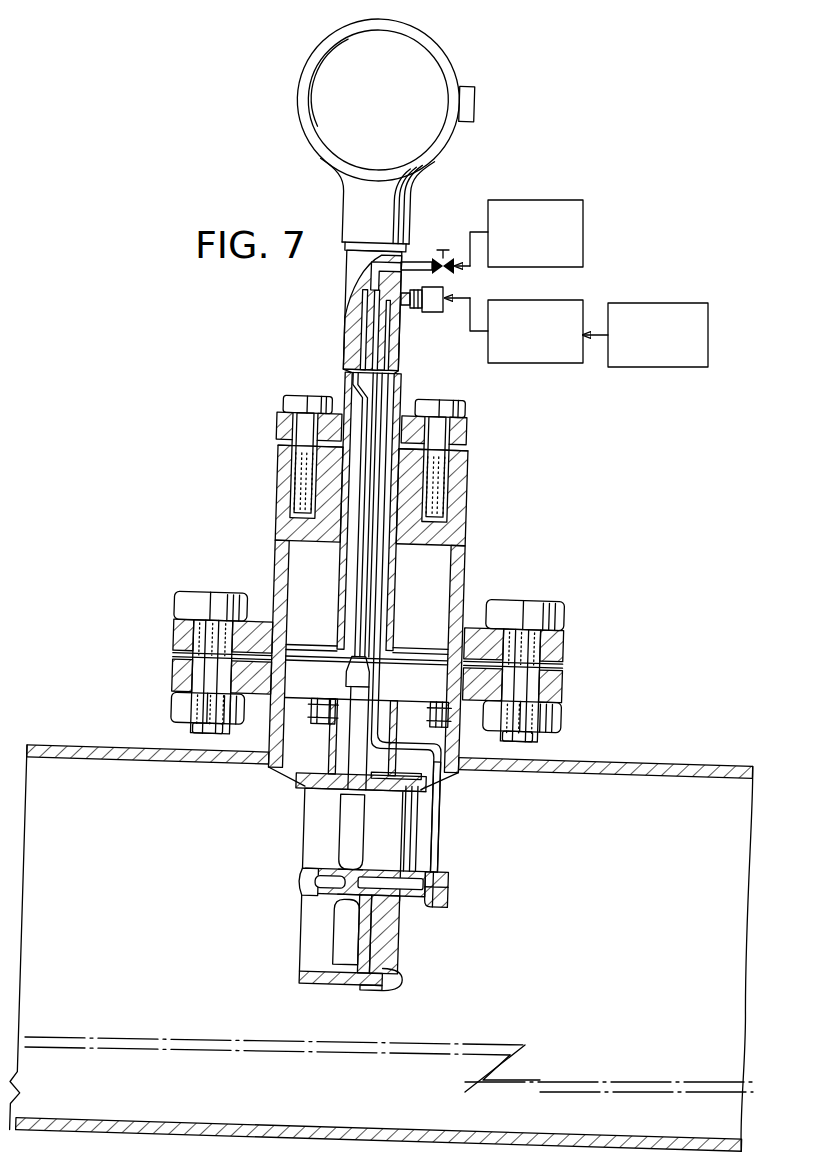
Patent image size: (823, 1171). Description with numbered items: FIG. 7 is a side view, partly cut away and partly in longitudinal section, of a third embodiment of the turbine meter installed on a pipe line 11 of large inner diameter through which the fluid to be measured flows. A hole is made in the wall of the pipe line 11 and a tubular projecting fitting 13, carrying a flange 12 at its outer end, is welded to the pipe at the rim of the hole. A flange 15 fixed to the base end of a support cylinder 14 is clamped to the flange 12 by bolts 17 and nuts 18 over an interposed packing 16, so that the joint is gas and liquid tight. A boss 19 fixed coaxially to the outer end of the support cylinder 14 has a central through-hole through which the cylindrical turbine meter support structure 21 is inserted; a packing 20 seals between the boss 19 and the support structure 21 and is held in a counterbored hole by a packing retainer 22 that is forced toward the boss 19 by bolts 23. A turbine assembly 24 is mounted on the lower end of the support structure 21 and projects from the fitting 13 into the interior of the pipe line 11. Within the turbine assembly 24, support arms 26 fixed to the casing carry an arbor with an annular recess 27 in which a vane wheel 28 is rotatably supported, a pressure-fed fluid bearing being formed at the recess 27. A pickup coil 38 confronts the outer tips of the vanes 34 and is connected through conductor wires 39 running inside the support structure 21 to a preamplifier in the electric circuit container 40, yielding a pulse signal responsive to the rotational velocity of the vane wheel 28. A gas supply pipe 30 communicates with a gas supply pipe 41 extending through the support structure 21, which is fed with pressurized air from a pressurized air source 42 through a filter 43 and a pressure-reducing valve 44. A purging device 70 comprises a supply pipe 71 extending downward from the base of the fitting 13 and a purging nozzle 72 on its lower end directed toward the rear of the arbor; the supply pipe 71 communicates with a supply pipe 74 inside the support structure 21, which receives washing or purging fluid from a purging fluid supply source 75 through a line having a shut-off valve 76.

The pipe line 11 is at (72, 746).
The flange 12 is at (563, 690).
The tubular projecting fitting 13 is at (465, 752).
The support cylinder 14 is at (462, 555).
The flange 15 is at (563, 646).
The packing 16 is at (260, 610).
The bolts 17 is at (545, 598).
The nuts 18 is at (562, 724).
The boss 19 is at (467, 484).
The packing 20 is at (410, 535).
The turbine meter support structure 21 is at (343, 380).
The packing retainer 22 is at (467, 432).
The bolts 23 is at (460, 410).
The turbine assembly 24 is at (335, 978).
The support arms 26 is at (404, 925).
The annular recess 27 is at (330, 862).
The vane wheel 28 is at (337, 923).
The gas supply pipe 30 is at (420, 822).
The vanes 34 is at (340, 829).
The pickup coil 38 is at (348, 744).
The conductor wires 39 is at (352, 384).
The electric circuit container 40 is at (297, 112).
The gas supply pipe 41 is at (390, 382).
The pressurized air source 42 is at (660, 306).
The filter 43 is at (530, 300).
The pressure-reducing valve 44 is at (433, 312).
The purging device 70 is at (452, 872).
The supply pipe 71 is at (444, 800).
The purging nozzle 72 is at (447, 887).
The supply pipe 74 is at (358, 348).
The purging fluid supply source 75 is at (532, 200).
The shut-off valve 76 is at (442, 250).